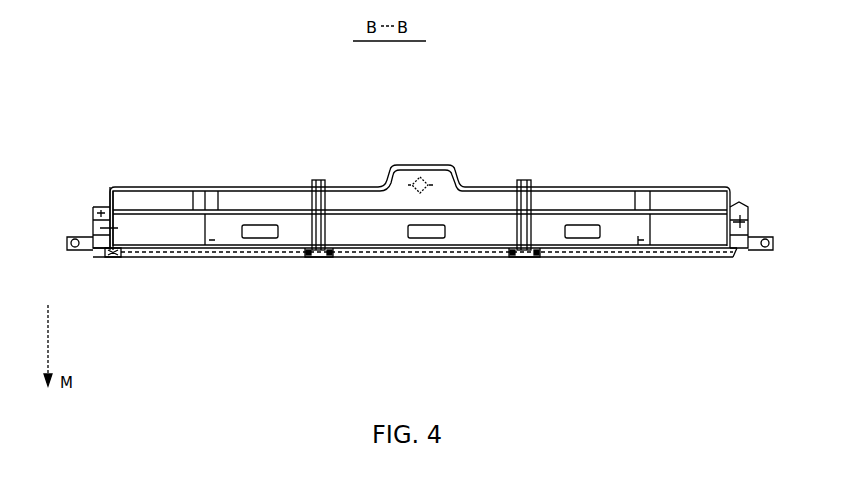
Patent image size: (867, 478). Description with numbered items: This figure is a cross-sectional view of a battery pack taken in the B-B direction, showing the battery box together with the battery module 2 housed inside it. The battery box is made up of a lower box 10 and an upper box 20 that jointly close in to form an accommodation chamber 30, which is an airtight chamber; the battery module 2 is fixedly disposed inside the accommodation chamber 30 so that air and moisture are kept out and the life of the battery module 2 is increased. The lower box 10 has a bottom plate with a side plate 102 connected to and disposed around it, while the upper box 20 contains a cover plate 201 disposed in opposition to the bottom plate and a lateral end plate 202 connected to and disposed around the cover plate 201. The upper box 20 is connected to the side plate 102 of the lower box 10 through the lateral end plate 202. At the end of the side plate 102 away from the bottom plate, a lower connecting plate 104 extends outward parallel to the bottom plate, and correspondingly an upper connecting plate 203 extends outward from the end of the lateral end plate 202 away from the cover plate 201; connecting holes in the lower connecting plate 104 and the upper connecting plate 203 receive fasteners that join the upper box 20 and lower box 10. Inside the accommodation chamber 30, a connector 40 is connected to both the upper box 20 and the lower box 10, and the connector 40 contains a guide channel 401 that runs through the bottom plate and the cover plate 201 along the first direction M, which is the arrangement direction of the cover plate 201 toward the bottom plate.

The battery module 2 is at (434, 242).
The lower box 10 is at (177, 272).
The upper box 20 is at (170, 187).
The accommodation chamber 30 is at (366, 235).
The connector 40 is at (313, 185).
The side plate 102 is at (112, 260).
The lower connecting plate 104 is at (100, 260).
The cover plate 201 is at (340, 188).
The lateral end plate 202 is at (112, 205).
The upper connecting plate 203 is at (100, 206).
The guide channel 401 is at (316, 258).